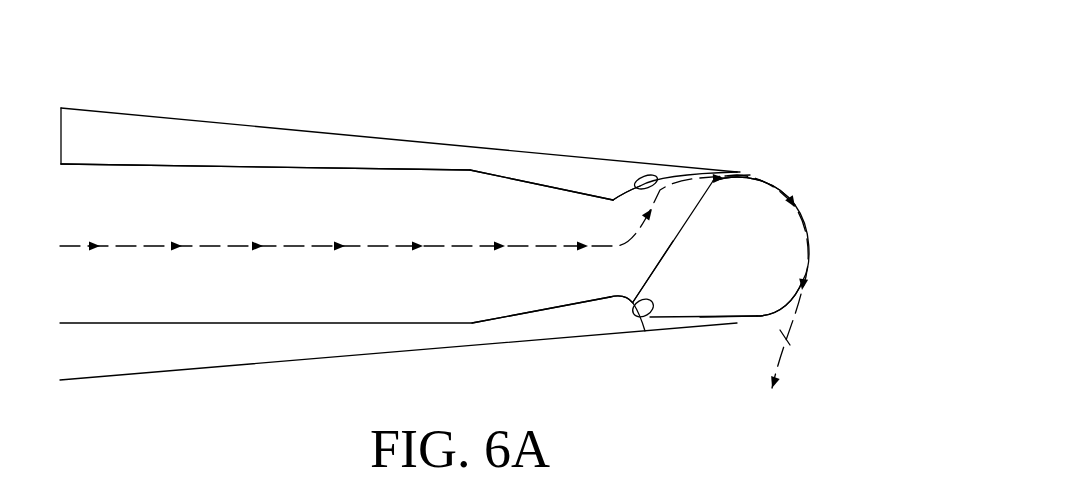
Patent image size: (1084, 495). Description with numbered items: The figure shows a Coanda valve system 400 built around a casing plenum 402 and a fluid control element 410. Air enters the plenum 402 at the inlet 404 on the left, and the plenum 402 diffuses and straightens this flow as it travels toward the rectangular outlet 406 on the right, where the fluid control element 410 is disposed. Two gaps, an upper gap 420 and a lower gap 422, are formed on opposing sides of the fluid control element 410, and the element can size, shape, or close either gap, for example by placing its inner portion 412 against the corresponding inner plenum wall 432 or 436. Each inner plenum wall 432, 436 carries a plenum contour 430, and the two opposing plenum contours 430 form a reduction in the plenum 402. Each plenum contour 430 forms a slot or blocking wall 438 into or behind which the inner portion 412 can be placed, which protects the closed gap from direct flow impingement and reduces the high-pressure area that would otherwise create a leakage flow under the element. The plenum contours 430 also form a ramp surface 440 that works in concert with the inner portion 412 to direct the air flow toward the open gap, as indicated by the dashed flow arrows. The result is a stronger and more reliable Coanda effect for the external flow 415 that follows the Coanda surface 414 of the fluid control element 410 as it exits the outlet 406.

The Coanda valve system 400 is at (835, 138).
The casing plenum 402 is at (425, 140).
The inlet 404 is at (62, 180).
The rectangular outlet 406 is at (740, 165).
The fluid control element 410 is at (783, 255).
The inner portion 412 is at (672, 297).
The Coanda surface 414 is at (777, 302).
The external flow 415 is at (787, 333).
The upper gap 420 is at (737, 172).
The lower gap 422 is at (740, 318).
The plenum contour 430 is at (610, 202).
The inner plenum wall 432 is at (236, 167).
The inner plenum wall 436 is at (238, 322).
The slot or blocking wall 438 is at (655, 190).
The ramp surface 440 is at (560, 188).